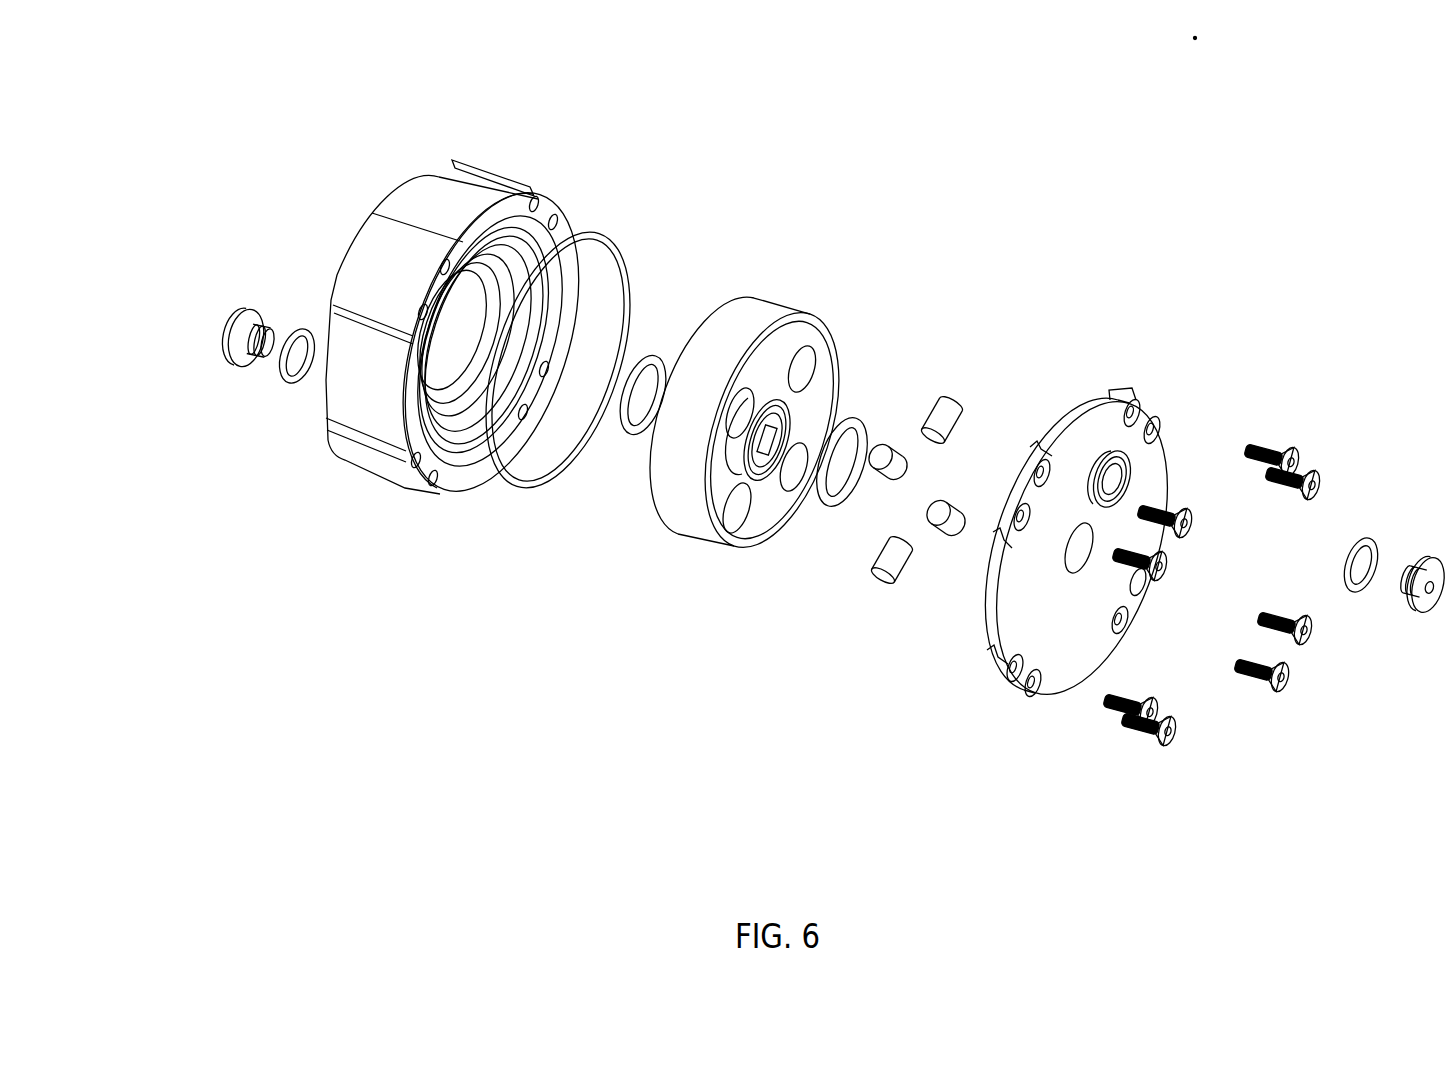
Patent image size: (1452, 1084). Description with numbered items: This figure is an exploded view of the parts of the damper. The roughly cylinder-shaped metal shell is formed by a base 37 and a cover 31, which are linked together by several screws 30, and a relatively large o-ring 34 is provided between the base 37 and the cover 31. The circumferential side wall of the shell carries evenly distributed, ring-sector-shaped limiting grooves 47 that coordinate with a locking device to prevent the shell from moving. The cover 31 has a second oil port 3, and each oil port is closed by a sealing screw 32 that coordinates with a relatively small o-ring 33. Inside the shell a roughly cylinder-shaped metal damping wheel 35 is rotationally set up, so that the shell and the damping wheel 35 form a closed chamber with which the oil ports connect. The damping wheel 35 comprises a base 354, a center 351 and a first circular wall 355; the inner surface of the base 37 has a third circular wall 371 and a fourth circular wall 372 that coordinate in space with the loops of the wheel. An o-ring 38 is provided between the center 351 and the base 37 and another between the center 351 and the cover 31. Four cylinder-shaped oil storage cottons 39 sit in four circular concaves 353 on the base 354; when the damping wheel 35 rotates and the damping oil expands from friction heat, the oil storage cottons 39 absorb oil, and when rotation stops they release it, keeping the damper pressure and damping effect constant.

The second oil port 3 is at (1071, 436).
The screws 30 is at (1212, 642).
The cover 31 is at (1057, 556).
The sealing screw 32 is at (790, 549).
The o-ring 33 is at (789, 558).
The o-ring 34 is at (519, 411).
The damping wheel 35 is at (727, 426).
The center 351 is at (830, 423).
The circular concaves 353 is at (826, 420).
The base 354 is at (765, 359).
The first circular wall 355 is at (717, 378).
The base 37 is at (435, 356).
The third circular wall 371 is at (515, 290).
The fourth circular wall 372 is at (439, 176).
The o-ring 38 is at (670, 519).
The oil storage cottons 39 is at (872, 553).
The limiting grooves 47 is at (349, 276).